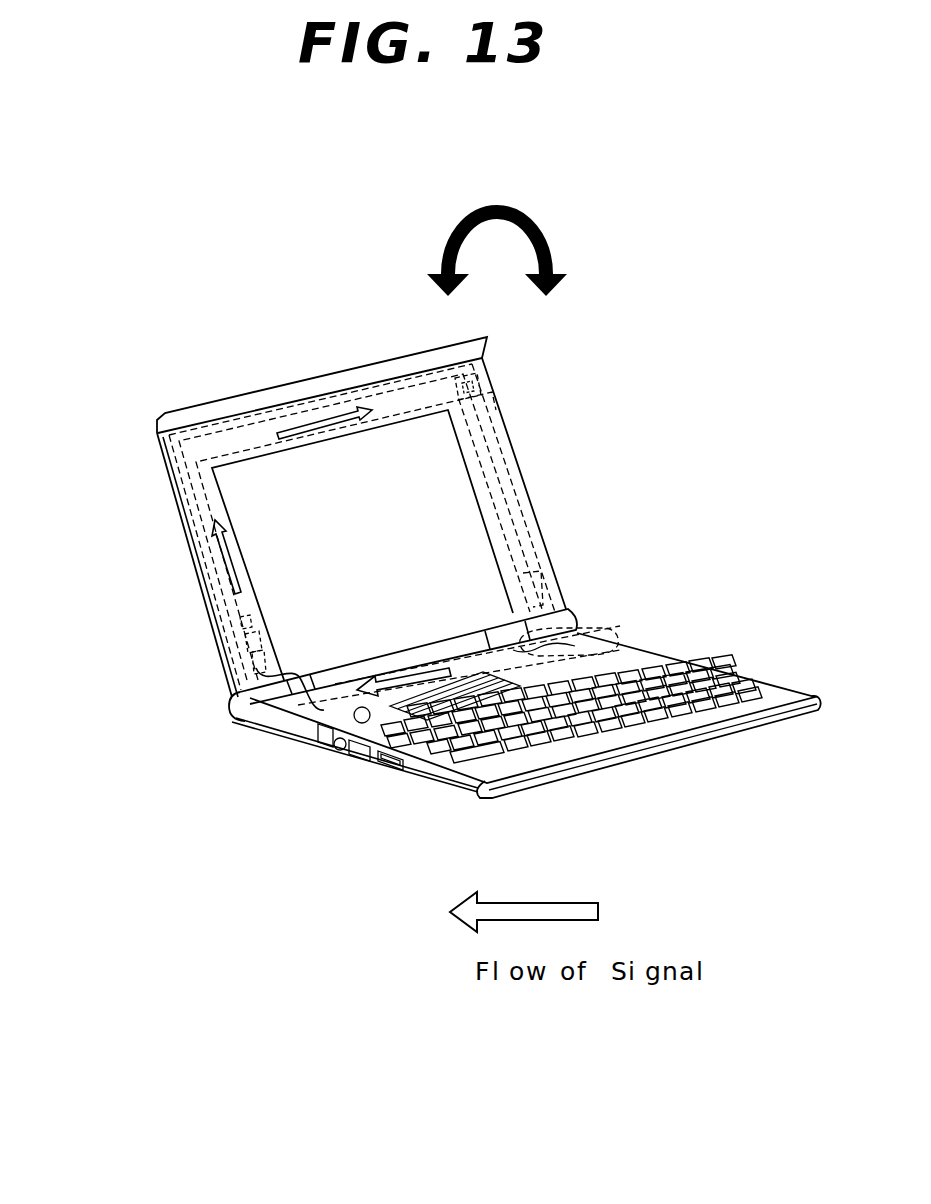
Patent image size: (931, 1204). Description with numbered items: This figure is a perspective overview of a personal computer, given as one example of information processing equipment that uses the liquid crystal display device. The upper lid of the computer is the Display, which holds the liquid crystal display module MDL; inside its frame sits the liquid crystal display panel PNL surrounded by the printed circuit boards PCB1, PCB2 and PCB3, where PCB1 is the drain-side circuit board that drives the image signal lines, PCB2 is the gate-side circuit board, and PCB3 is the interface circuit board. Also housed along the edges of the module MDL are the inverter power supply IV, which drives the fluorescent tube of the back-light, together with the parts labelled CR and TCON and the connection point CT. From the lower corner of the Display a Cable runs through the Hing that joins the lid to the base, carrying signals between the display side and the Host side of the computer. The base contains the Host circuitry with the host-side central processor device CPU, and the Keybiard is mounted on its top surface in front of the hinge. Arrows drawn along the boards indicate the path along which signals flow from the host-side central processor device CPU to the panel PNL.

The display unit (lid) Display is at (230, 398).
The liquid crystal display panel PNL is at (362, 545).
The drain-side circuit board PCB1 is at (410, 398).
The gate-side circuit board PCB2 is at (467, 440).
The interface circuit board PCB3 is at (212, 508).
The connector CR is at (478, 390).
The inverter power supply IV is at (507, 468).
The liquid crystal display module MDL is at (543, 592).
The timing controller TCON is at (277, 658).
The connector terminal CT is at (243, 620).
The cable Cable is at (228, 662).
The hinge Hing is at (318, 672).
The host system board Host is at (574, 632).
The host-side central processor device CPU is at (587, 637).
The keyboard Keybiard is at (653, 723).